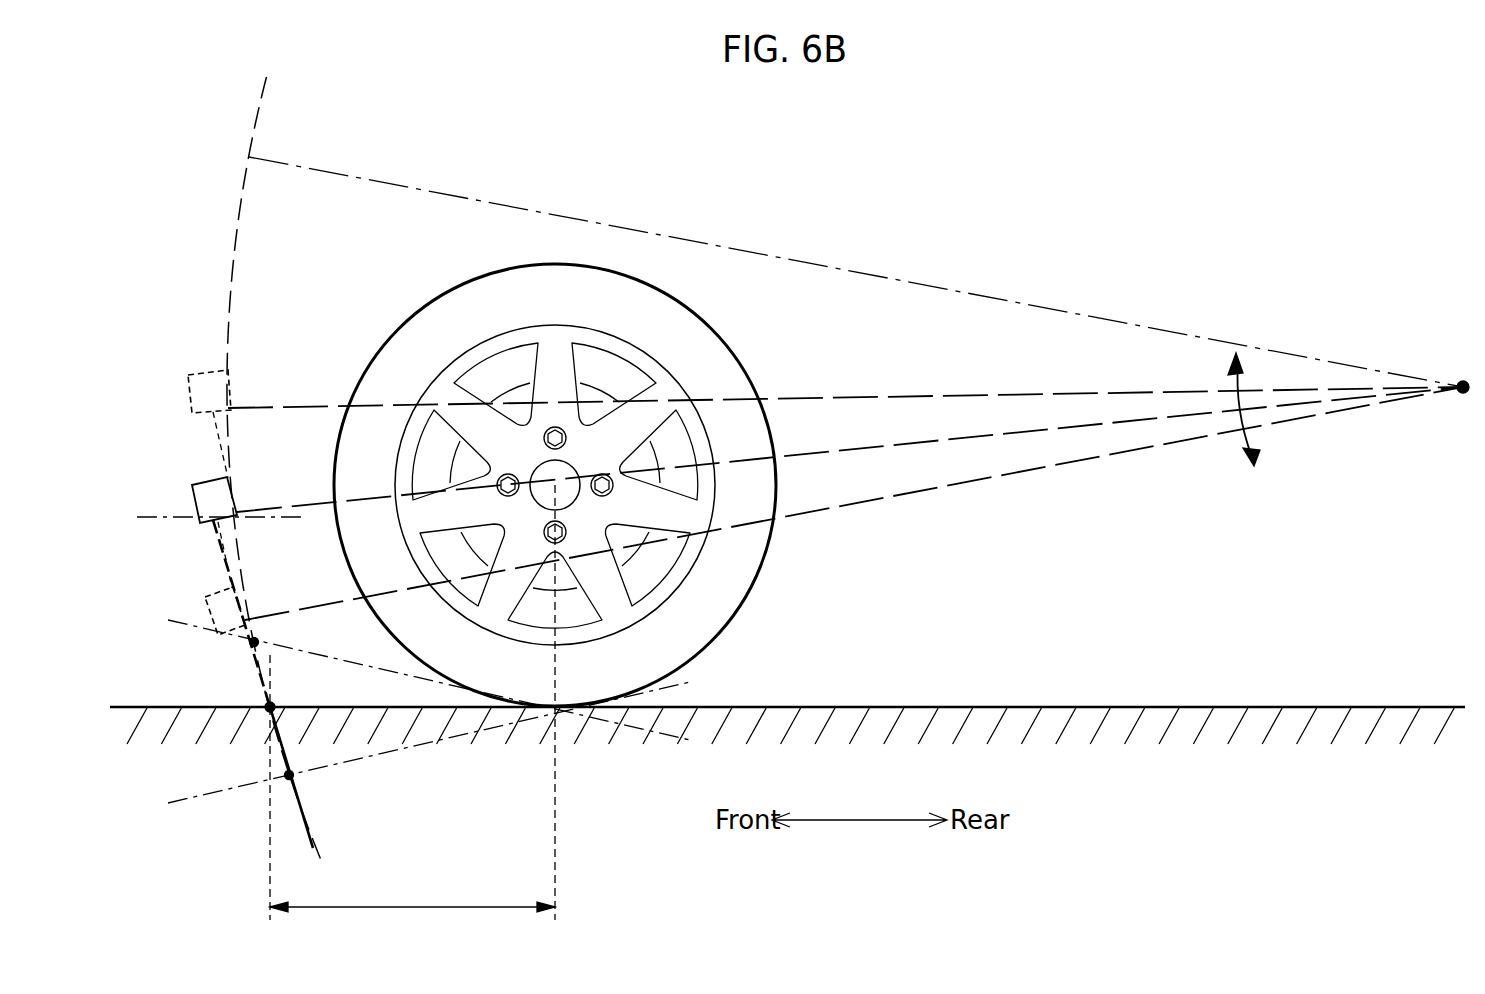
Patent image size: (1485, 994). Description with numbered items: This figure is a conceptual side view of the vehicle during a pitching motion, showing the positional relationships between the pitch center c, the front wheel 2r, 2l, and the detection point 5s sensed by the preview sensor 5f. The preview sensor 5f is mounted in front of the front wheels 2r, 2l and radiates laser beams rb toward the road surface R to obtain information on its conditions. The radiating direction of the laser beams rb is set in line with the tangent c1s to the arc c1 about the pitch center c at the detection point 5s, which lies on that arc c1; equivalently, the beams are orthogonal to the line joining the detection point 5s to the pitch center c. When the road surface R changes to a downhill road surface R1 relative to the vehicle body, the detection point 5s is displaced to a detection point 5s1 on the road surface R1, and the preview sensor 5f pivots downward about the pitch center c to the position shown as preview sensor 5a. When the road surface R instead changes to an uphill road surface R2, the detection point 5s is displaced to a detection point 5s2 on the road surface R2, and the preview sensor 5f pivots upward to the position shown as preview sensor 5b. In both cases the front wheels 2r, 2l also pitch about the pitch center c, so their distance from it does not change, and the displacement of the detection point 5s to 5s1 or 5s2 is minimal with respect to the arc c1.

The front wheel 2l is at (715, 330).
The front wheel 2r is at (602, 485).
The pitch center c is at (1462, 374).
The arc c1 is at (228, 317).
The preview sensor 5b is at (188, 392).
The preview sensor 5f is at (192, 500).
The preview sensor 5a is at (205, 612).
The laser beams rb is at (224, 552).
The tangent c1s is at (308, 838).
The downhill road surface R1 is at (210, 795).
The uphill road surface R2 is at (195, 628).
The detection point 5s is at (270, 712).
The detection point 5s1 is at (292, 778).
The detection point 5s2 is at (260, 644).
The road surface R is at (950, 707).